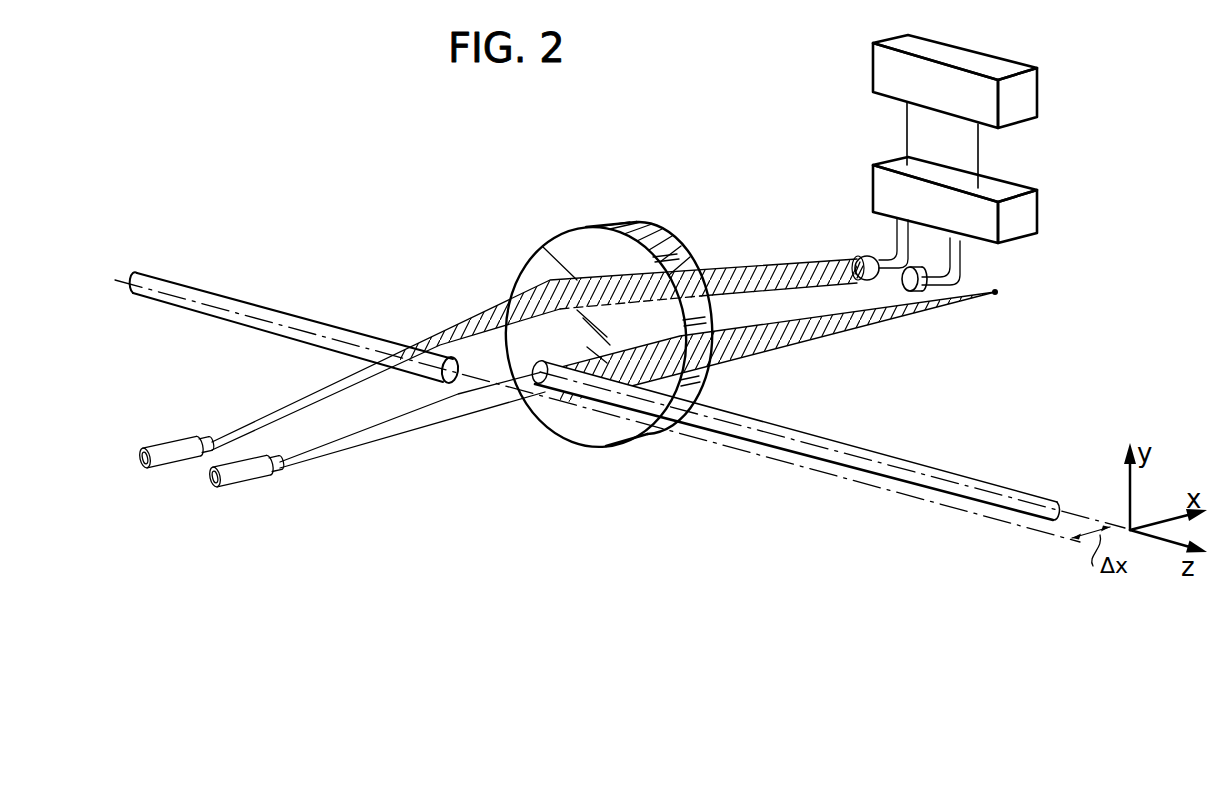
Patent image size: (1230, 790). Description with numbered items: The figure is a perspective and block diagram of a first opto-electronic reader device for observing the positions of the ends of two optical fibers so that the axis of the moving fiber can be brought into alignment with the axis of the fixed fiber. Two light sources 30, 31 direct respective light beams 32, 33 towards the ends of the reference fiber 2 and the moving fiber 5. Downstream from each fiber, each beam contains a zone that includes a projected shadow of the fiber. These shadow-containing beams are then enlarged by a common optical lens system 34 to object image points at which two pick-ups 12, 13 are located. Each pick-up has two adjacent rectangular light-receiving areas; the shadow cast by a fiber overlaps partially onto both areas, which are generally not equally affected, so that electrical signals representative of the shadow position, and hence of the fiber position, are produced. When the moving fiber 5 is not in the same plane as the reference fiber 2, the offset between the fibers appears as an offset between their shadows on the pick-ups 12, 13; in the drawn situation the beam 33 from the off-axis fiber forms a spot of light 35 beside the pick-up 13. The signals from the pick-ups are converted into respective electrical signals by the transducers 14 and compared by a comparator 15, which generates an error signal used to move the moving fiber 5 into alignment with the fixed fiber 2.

The reference fiber 2 is at (250, 313).
The moving fiber 5 is at (858, 457).
The pick-up 12 is at (865, 256).
The pick-up 13 is at (925, 283).
The transducers 14 is at (893, 192).
The comparator 15 is at (893, 73).
The light source 30 is at (173, 450).
The light source 31 is at (245, 473).
The light beam 32 is at (317, 397).
The light beam 33 is at (393, 432).
The optical lens system 34 is at (565, 248).
The spot of light 35 is at (997, 295).